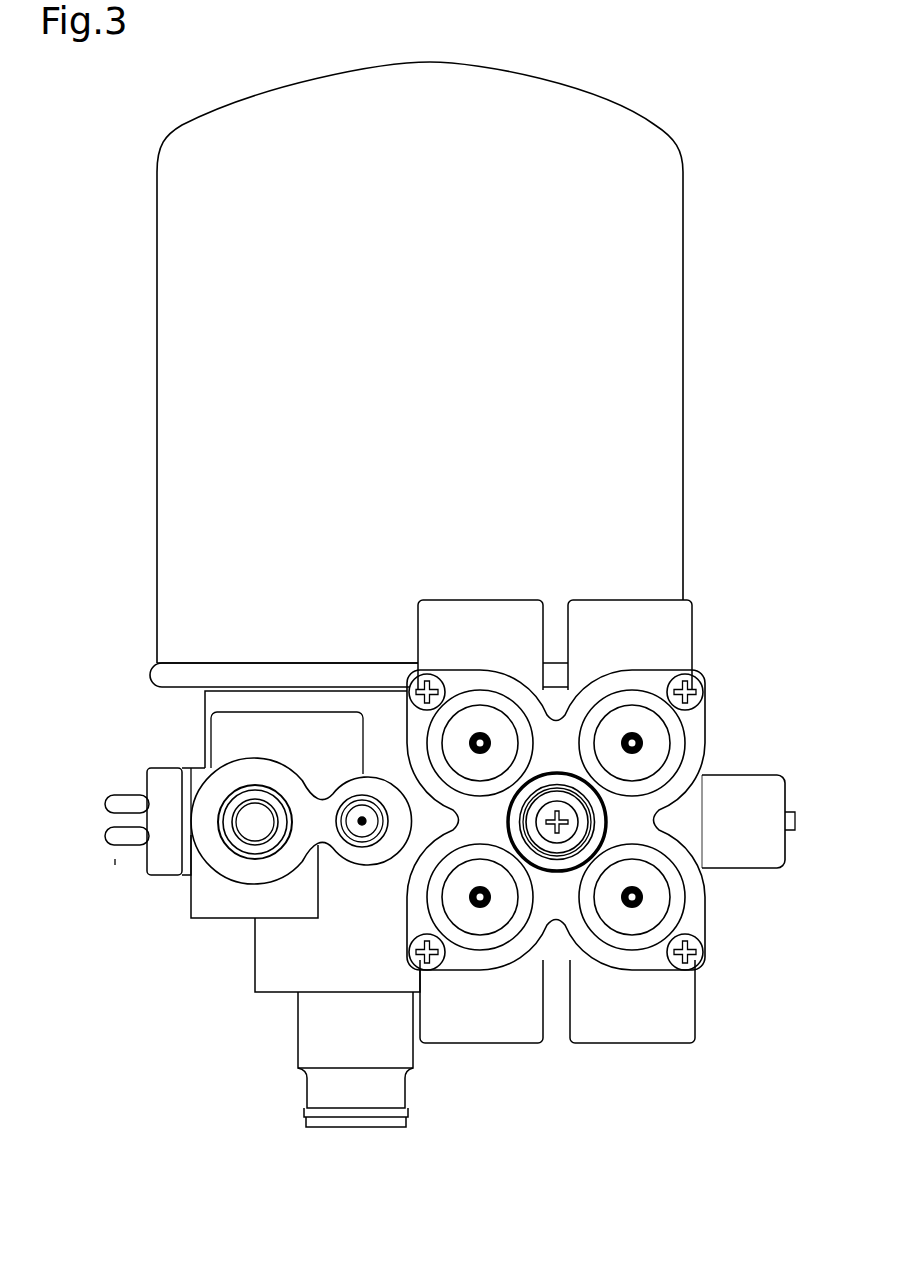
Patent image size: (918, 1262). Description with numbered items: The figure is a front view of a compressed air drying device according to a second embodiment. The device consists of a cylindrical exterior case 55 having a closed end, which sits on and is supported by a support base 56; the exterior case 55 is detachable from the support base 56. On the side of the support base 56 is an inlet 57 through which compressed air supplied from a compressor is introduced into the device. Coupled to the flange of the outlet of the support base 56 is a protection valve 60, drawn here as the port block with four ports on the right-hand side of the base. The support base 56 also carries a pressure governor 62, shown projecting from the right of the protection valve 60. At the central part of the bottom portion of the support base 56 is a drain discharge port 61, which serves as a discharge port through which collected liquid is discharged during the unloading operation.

The exterior case 55 is at (684, 256).
The support base 56 is at (205, 727).
The inlet 57 is at (238, 855).
The protection valve 60 is at (707, 914).
The drain discharge port 61 is at (406, 1090).
The pressure governor 62 is at (733, 775).